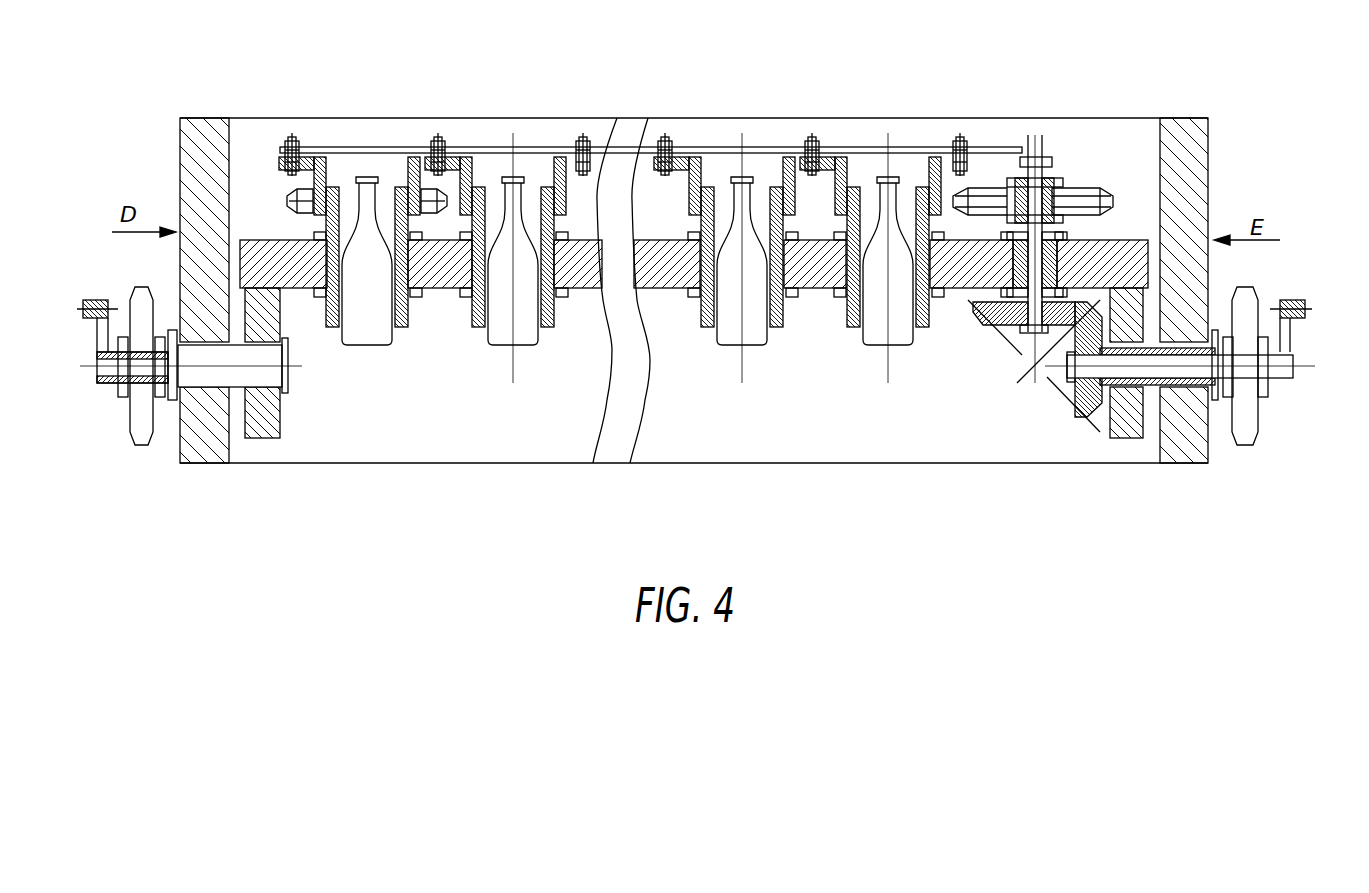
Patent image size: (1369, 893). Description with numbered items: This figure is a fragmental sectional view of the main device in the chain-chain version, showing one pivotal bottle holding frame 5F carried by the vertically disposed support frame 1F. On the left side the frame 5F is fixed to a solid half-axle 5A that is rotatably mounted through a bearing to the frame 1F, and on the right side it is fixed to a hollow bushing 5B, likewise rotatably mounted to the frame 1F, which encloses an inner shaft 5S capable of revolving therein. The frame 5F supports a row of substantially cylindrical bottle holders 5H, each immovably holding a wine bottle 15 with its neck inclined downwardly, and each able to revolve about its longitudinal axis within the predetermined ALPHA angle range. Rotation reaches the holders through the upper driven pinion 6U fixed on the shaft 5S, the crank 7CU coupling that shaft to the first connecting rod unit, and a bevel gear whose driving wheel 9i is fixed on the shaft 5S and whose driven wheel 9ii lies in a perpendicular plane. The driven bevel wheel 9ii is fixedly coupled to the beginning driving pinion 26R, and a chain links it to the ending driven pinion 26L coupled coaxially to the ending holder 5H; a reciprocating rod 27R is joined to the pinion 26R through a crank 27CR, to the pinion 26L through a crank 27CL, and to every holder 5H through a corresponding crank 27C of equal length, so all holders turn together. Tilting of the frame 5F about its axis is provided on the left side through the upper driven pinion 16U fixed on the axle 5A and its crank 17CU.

The support frame 1F is at (1187, 430).
The axle 5A is at (265, 373).
The bottle holding frame 5F is at (258, 415).
The bushing 5B is at (1158, 382).
The bottle holder 5H is at (700, 322).
The inner shaft 5S is at (1077, 370).
The upper driven pinion 6U is at (1248, 425).
The crank 7CU is at (1287, 342).
The driving bevel wheel 9i is at (1087, 418).
The driven bevel wheel 9ii is at (987, 312).
The wine bottle 15 is at (757, 325).
The upper driven pinion 16U is at (143, 422).
The crank 17CU is at (105, 340).
The ending driven pinion 26L is at (283, 197).
The beginning driving pinion 26R is at (1075, 197).
The crank 27C is at (690, 163).
The crank 27CL is at (316, 167).
The crank 27CR is at (985, 163).
The reciprocating rod 27R is at (493, 147).